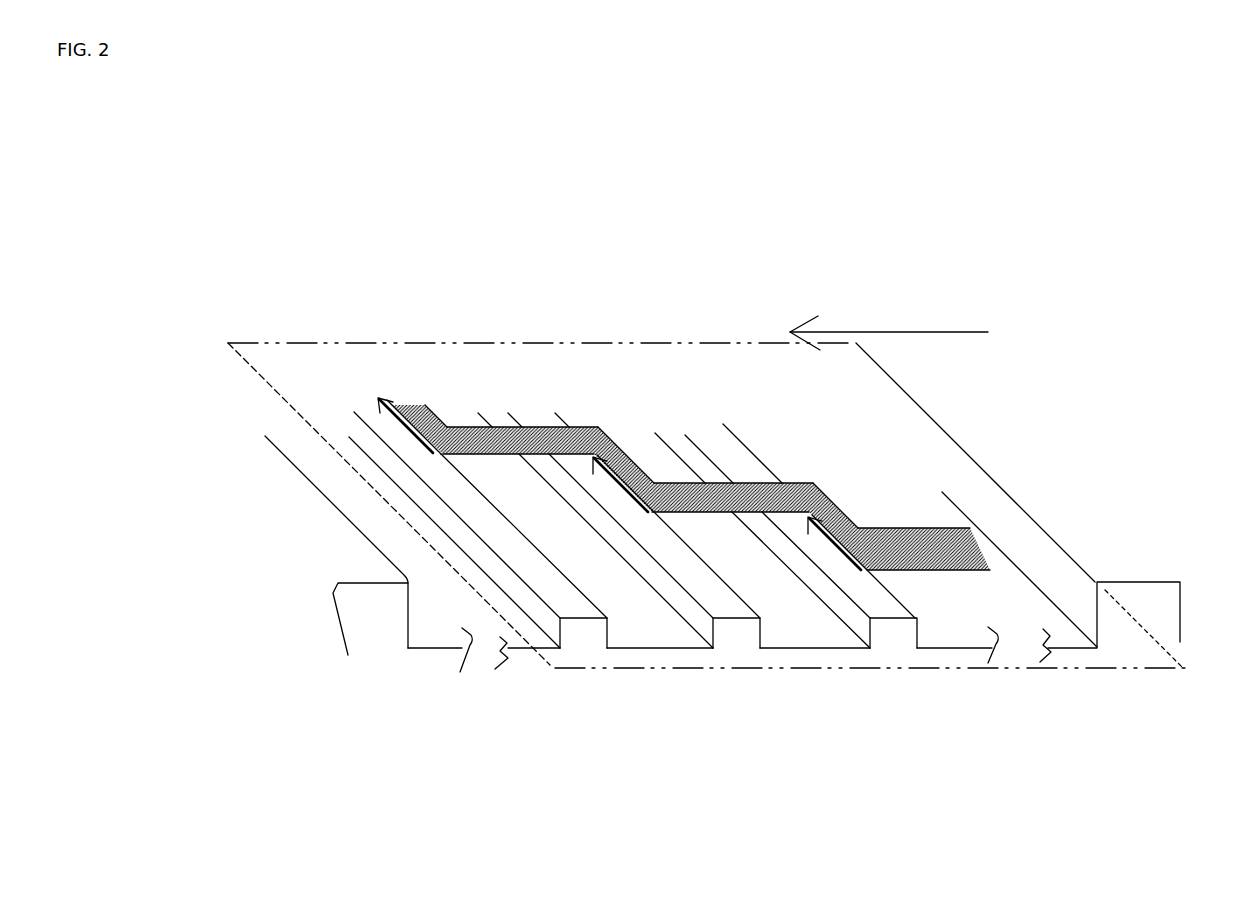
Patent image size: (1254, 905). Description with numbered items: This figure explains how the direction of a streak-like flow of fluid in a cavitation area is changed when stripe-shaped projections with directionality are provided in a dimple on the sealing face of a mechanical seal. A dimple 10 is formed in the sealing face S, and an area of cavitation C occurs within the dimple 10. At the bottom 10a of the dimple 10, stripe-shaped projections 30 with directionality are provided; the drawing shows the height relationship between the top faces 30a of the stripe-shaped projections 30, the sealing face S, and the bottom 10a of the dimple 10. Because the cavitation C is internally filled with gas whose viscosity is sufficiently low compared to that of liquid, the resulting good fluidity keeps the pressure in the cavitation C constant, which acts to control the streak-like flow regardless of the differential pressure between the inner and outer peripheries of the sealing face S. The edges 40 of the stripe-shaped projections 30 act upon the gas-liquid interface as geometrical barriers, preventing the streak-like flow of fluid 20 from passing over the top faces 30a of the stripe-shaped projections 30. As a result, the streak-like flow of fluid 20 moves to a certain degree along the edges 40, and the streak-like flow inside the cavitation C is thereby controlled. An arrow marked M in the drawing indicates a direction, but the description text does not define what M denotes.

The dimple 10 is at (1057, 583).
The bottom of the dimple 10a is at (957, 617).
The streak-like flow of fluid 20 is at (910, 537).
The stripe-shaped projection 30 is at (588, 630).
The top face of the stripe-shaped projection 30a is at (577, 600).
The edge of the stripe-shaped projection 40 is at (448, 423).
The sealing face S is at (360, 565).
The cavitation C is at (1083, 668).
The moving direction M is at (889, 325).